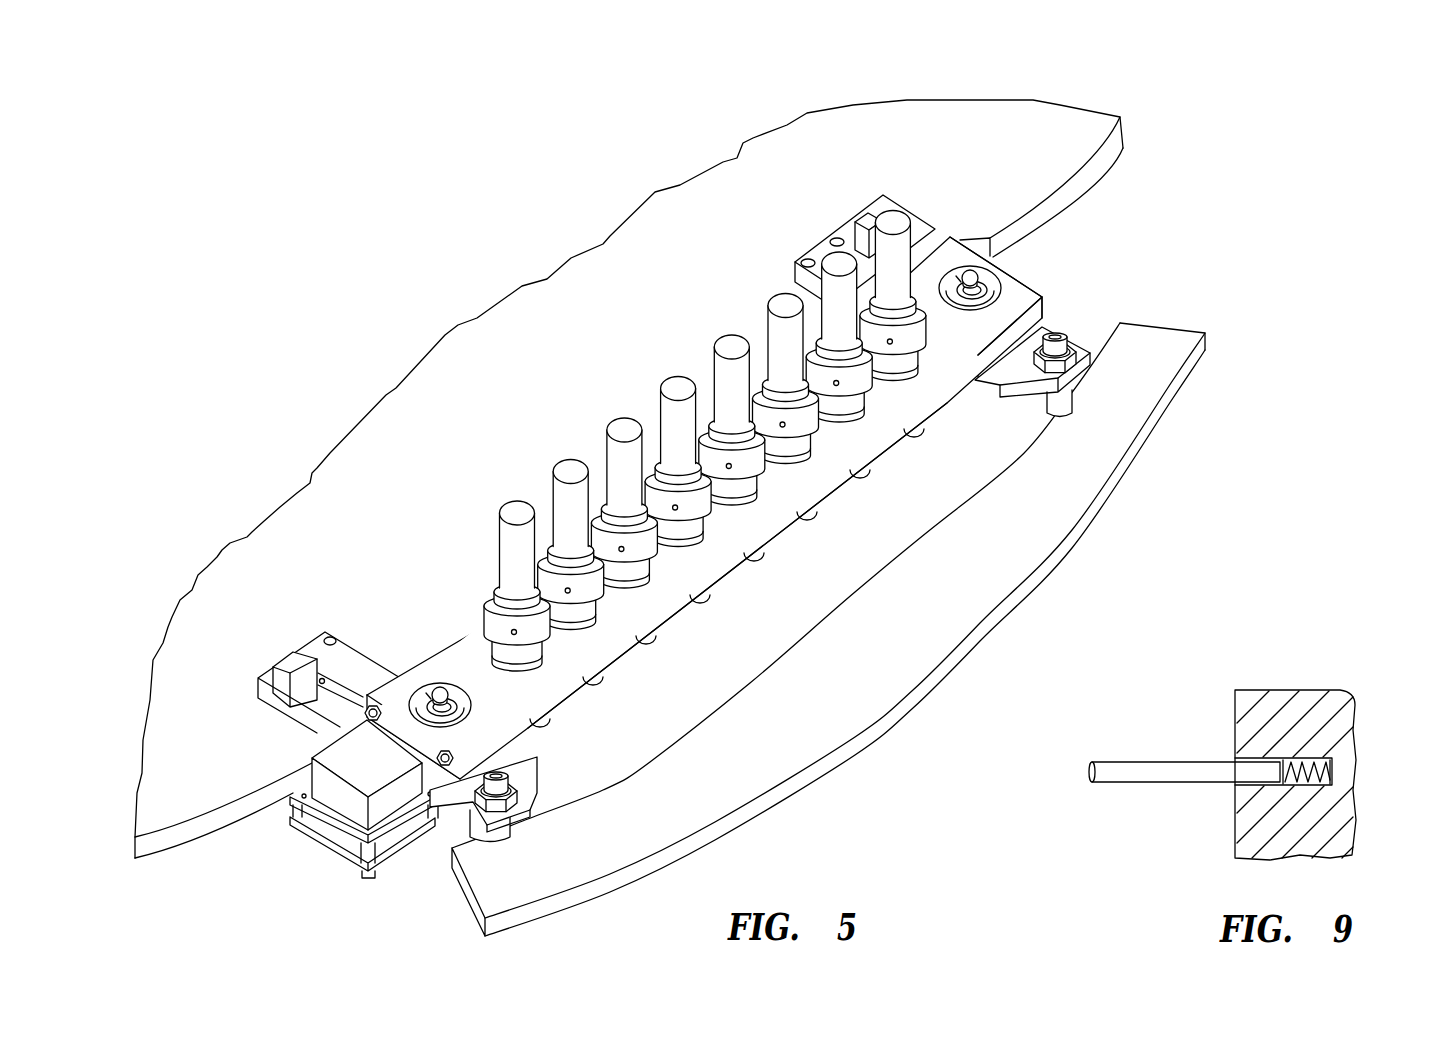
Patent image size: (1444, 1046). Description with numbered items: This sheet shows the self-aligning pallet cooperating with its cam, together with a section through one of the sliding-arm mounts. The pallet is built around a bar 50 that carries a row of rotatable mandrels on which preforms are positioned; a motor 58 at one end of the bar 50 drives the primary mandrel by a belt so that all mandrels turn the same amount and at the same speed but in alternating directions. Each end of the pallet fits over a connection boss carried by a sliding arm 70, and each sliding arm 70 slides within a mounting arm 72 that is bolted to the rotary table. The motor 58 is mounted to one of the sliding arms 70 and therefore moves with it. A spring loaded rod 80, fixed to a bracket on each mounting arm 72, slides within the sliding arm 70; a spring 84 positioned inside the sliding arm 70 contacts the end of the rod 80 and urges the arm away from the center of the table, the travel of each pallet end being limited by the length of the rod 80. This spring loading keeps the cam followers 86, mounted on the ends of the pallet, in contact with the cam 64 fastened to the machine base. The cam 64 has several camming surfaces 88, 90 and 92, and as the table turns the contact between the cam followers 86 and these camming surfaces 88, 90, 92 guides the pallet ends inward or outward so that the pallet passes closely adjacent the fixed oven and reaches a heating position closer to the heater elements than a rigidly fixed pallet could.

In FIG. 5, the bar 50 is at (430, 650).
In FIG. 5, the motor 58 is at (315, 752).
In FIG. 5, the cam 64 is at (963, 599).
In FIG. 5, the mounting arm 72 is at (349, 653).
In FIG. 5, the cam follower 86 is at (483, 829).
In FIG. 5, the camming surface 88 is at (603, 788).
In FIG. 5, the camming surface 90 is at (823, 613).
In FIG. 5, the camming surface 92 is at (1103, 327).
In FIG. 9, the sliding arm 70 is at (1287, 695).
In FIG. 9, the spring loaded rod 80 is at (1158, 765).
In FIG. 9, the spring 84 is at (1328, 775).